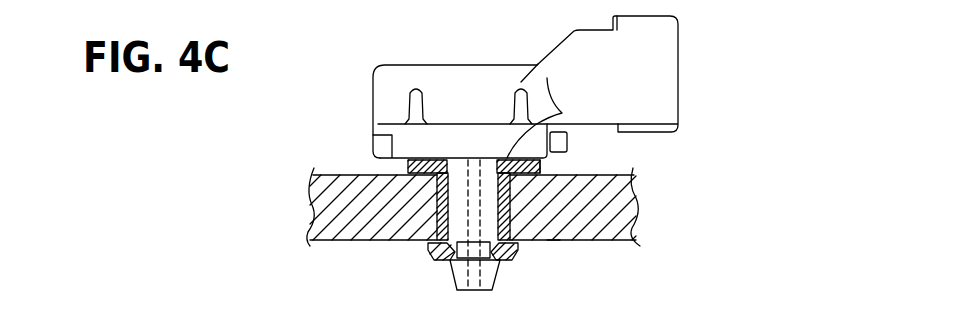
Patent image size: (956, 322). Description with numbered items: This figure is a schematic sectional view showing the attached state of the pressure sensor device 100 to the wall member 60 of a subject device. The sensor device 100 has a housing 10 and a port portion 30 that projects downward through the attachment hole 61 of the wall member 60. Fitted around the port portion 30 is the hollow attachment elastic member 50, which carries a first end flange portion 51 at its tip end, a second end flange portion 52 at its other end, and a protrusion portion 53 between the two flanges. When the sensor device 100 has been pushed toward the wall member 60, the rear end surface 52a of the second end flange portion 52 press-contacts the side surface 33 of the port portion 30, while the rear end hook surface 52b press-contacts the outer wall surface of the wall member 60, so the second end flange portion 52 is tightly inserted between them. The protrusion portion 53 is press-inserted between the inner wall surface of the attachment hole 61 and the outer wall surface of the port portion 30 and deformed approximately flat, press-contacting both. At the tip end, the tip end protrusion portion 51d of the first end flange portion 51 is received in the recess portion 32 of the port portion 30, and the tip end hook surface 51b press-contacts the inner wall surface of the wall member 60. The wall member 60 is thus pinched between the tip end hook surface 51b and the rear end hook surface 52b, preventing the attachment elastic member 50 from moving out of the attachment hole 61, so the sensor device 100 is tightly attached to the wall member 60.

The pressure sensor device 100 is at (397, 58).
The housing 10 is at (470, 77).
The side surface 33 is at (562, 113).
The second end flange portion 52 is at (523, 173).
The rear end surface 52a is at (518, 162).
The rear end hook surface 52b is at (512, 222).
The protrusion portion 53 is at (436, 194).
The attachment elastic member 50 is at (640, 199).
The port portion 30 is at (560, 240).
The first end flange portion 51 is at (517, 248).
The tip end hook surface 51b is at (517, 242).
The tip end protrusion portion 51d is at (503, 262).
The recess portion 32 is at (472, 252).
The wall member 60 is at (343, 241).
The attachment hole 61 is at (423, 246).